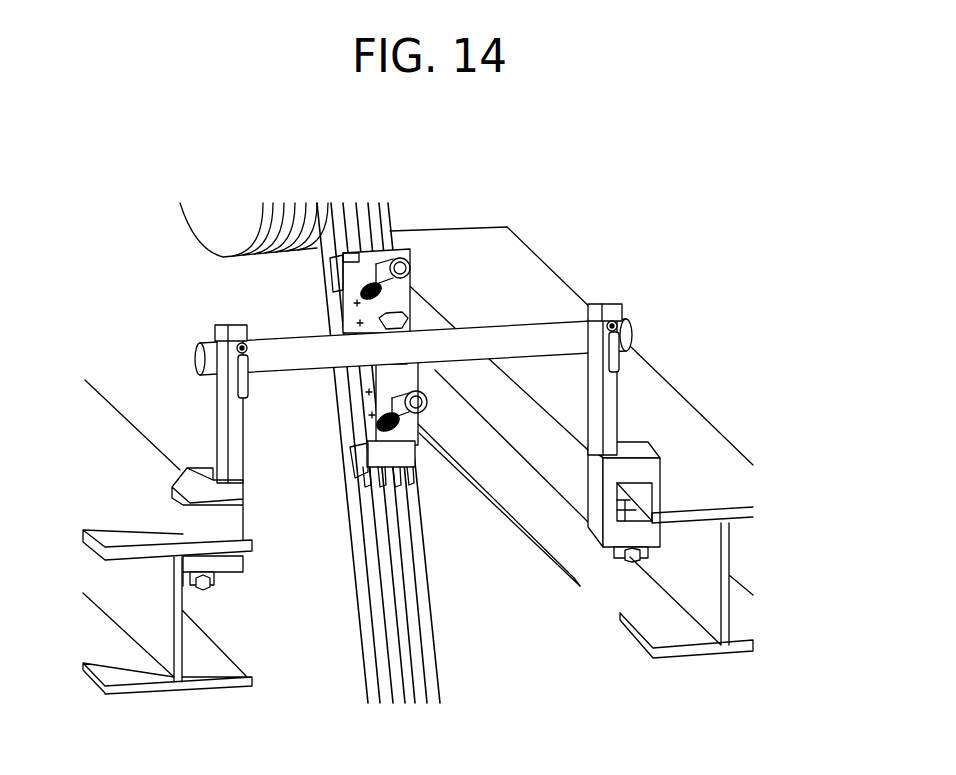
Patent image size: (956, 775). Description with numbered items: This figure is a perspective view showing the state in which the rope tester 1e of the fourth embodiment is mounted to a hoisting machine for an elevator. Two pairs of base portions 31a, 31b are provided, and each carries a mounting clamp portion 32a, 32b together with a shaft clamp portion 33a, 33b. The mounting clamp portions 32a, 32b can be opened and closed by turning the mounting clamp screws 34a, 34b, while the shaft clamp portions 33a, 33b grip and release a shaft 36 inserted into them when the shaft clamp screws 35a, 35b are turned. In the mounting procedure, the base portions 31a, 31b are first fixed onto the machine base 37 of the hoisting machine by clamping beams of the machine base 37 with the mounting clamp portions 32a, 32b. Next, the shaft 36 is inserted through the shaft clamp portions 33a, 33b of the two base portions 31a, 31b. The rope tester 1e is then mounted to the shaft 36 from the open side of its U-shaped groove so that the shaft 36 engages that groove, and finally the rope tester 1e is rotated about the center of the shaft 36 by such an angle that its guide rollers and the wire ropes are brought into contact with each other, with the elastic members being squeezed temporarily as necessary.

The rope tester 1e is at (428, 217).
The base portion 31a is at (215, 415).
The base portion 31b is at (617, 412).
The mounting clamp portion 32a is at (172, 485).
The mounting clamp portion 32b is at (655, 480).
The shaft clamp portion 33a is at (217, 329).
The shaft clamp portion 33b is at (600, 320).
The mounting clamp screw 34a is at (207, 584).
The mounting clamp screw 34b is at (608, 552).
The shaft clamp screw 35a is at (247, 345).
The shaft clamp screw 35b is at (618, 324).
The shaft 36 is at (513, 327).
The machine base 37 is at (653, 360).